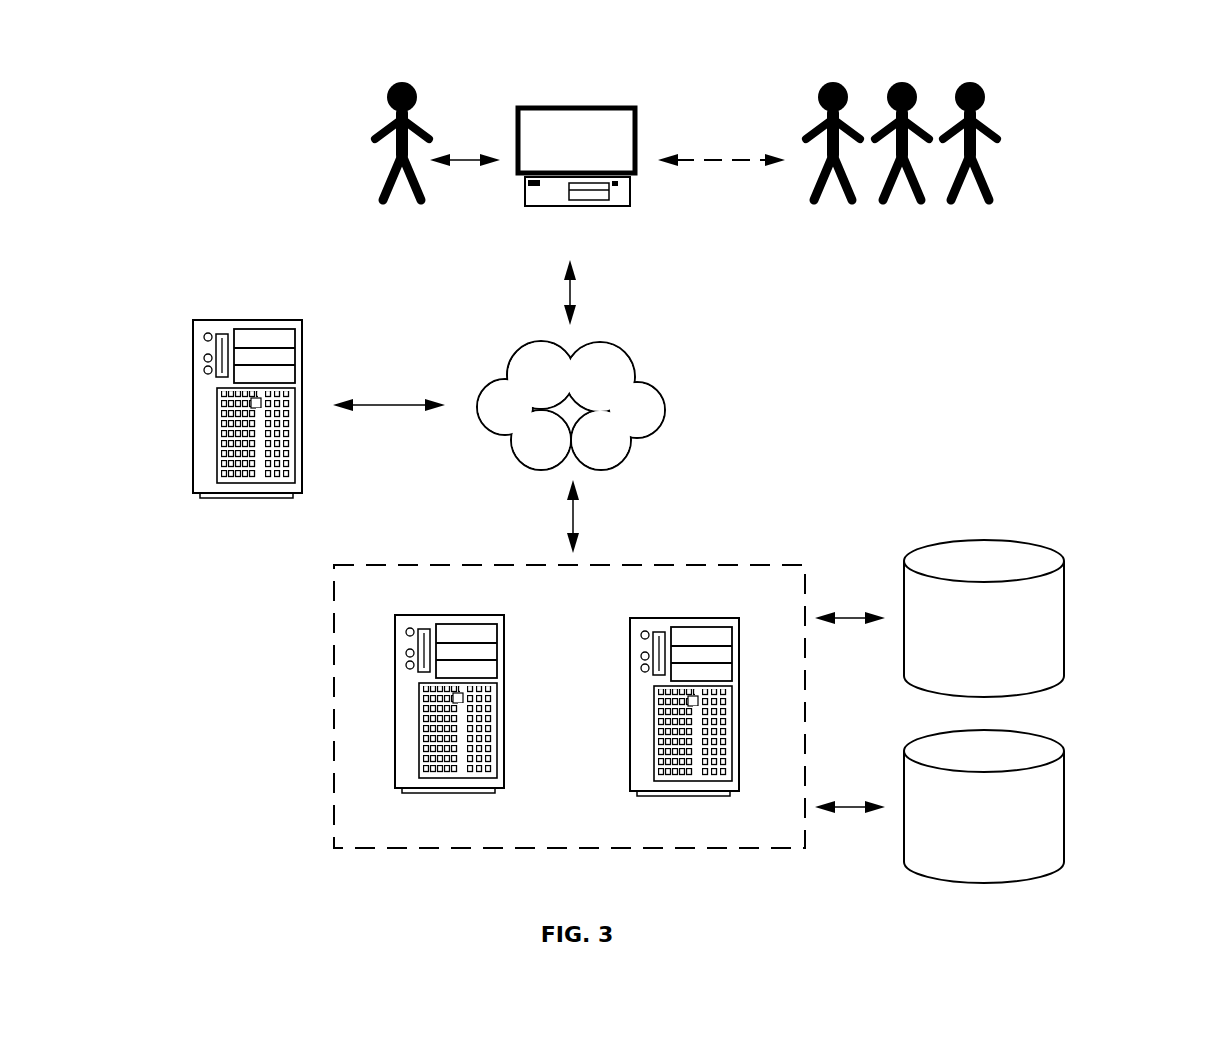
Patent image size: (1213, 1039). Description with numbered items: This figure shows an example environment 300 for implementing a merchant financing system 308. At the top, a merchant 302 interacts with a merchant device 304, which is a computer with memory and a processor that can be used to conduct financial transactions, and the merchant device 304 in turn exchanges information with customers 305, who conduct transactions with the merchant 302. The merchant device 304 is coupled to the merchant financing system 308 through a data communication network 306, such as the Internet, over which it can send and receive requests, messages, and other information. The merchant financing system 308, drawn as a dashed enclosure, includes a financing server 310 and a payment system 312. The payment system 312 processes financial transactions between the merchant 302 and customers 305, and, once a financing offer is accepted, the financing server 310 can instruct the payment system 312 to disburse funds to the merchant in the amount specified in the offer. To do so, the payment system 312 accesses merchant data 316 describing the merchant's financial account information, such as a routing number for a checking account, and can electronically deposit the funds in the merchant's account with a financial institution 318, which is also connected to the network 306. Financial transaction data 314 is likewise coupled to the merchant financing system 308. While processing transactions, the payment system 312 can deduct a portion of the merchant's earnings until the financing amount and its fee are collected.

The environment 300 is at (1145, 88).
The merchant 302 is at (398, 73).
The merchant device 304 is at (552, 104).
The customers 305 is at (899, 74).
The network 306 is at (598, 341).
The merchant financing system 308 is at (718, 565).
The financing server 310 is at (650, 618).
The payment system 312 is at (418, 615).
The financial transaction data 314 is at (1068, 553).
The merchant data 316 is at (1066, 740).
The financial institution 318 is at (218, 320).